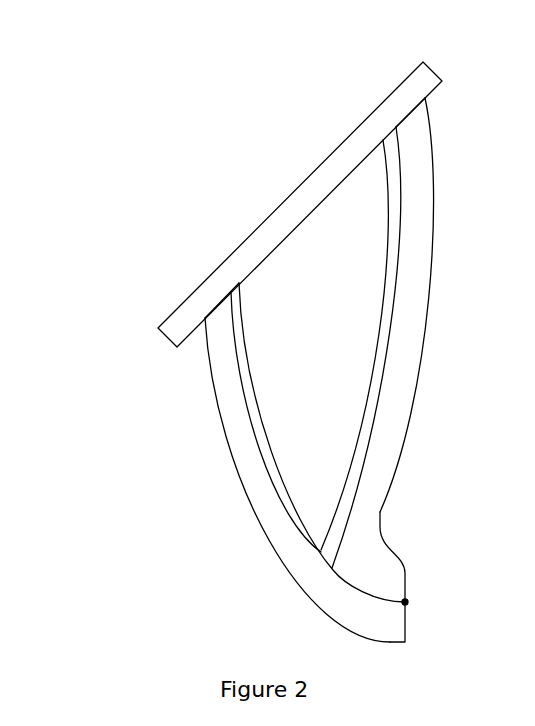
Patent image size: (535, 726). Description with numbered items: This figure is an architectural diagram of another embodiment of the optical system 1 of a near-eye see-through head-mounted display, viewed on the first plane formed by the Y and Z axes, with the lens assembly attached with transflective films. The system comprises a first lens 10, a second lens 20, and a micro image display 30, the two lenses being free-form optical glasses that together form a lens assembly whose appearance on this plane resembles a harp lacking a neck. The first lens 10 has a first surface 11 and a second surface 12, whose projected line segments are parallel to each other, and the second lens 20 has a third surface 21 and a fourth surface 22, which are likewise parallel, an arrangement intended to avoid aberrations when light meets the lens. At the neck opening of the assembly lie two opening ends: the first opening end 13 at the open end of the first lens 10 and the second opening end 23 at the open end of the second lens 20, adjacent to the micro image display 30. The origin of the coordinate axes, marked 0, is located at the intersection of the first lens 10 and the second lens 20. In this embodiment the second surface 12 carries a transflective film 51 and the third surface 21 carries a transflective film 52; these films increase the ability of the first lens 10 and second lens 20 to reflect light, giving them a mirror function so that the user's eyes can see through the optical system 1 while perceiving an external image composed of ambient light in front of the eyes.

The optical system of near-eye see-through head-mounted display 1 is at (122, 72).
The origin of coordinate axis 0 is at (410, 602).
The first lens 10 is at (277, 462).
The first surface 11 is at (212, 387).
The second surface 12 is at (242, 388).
The first opening end 13 is at (214, 312).
The second lens 20 is at (418, 370).
The third surface 21 is at (400, 237).
The fourth surface 22 is at (438, 205).
The second opening end 23 is at (416, 110).
The micro image display 30 is at (420, 82).
The transflective film 51 is at (238, 352).
The transflective film 52 is at (390, 278).